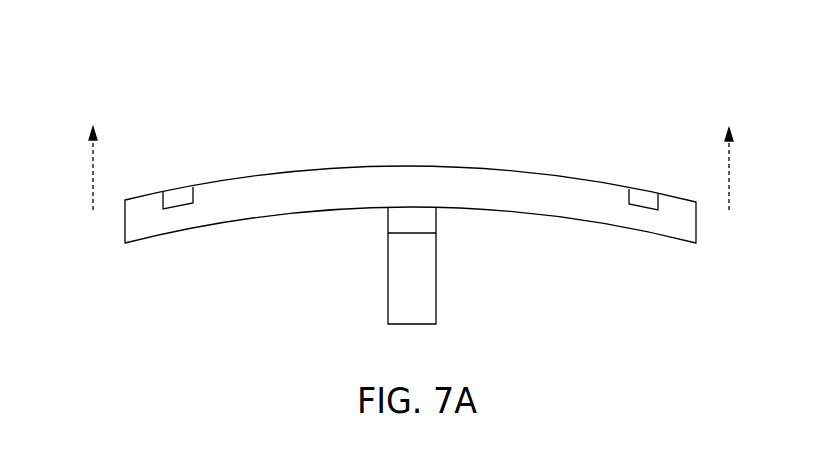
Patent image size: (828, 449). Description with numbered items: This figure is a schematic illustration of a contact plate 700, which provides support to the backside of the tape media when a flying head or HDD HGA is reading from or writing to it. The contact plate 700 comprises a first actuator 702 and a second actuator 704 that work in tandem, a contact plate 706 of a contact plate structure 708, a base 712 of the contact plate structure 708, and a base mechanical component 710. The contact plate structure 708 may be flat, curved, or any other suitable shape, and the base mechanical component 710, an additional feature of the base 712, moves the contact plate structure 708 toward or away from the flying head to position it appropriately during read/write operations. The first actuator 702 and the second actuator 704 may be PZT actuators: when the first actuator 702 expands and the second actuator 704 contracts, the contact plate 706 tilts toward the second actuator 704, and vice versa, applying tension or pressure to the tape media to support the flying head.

The contact plate 700 is at (153, 97).
The first actuator 702 is at (178, 190).
The second actuator 704 is at (647, 200).
The contact plate 706 is at (357, 167).
The contact plate structure 708 is at (367, 190).
The base mechanical component 710 is at (422, 221).
The base 712 is at (422, 285).